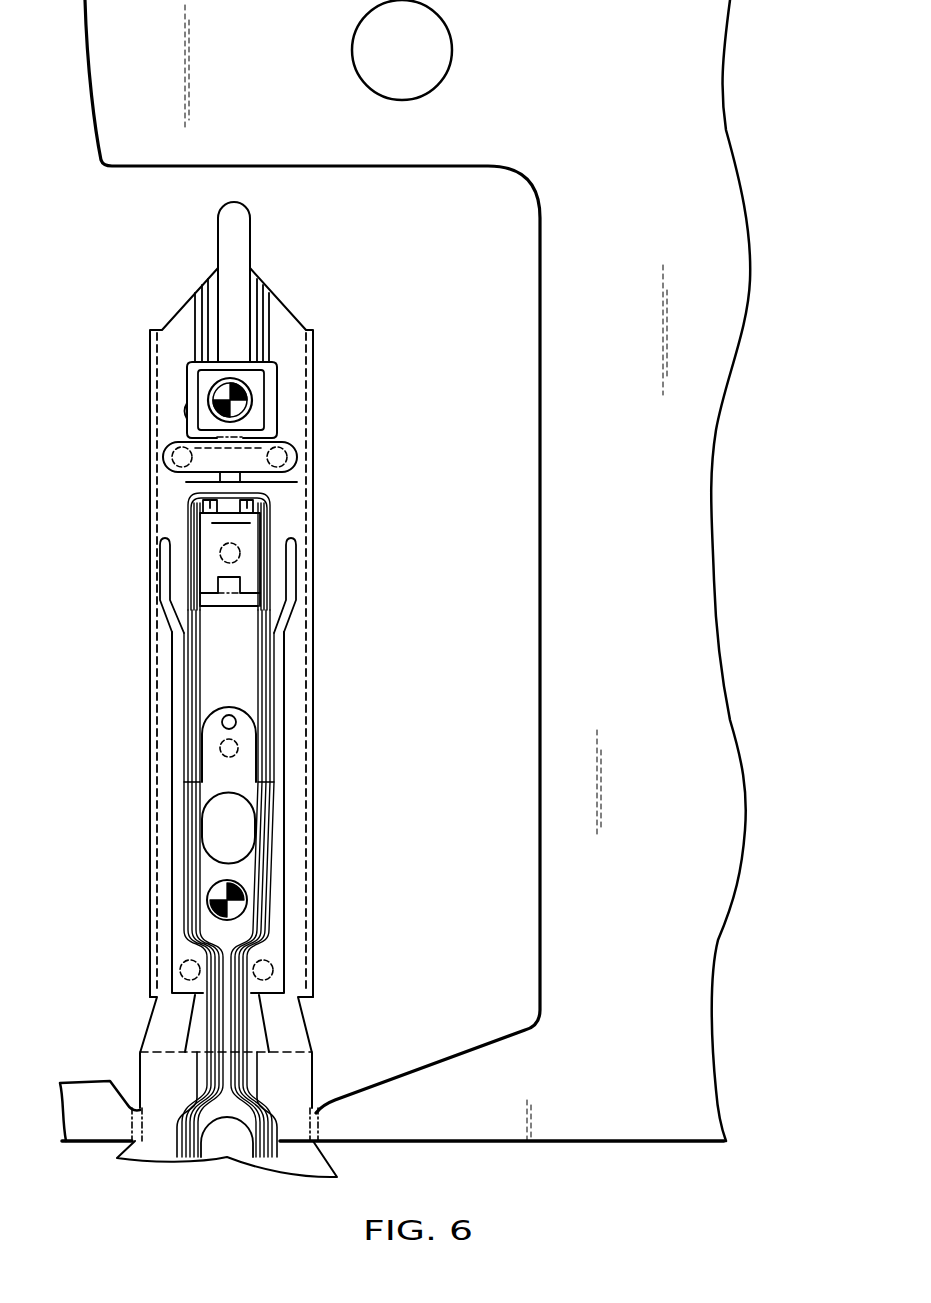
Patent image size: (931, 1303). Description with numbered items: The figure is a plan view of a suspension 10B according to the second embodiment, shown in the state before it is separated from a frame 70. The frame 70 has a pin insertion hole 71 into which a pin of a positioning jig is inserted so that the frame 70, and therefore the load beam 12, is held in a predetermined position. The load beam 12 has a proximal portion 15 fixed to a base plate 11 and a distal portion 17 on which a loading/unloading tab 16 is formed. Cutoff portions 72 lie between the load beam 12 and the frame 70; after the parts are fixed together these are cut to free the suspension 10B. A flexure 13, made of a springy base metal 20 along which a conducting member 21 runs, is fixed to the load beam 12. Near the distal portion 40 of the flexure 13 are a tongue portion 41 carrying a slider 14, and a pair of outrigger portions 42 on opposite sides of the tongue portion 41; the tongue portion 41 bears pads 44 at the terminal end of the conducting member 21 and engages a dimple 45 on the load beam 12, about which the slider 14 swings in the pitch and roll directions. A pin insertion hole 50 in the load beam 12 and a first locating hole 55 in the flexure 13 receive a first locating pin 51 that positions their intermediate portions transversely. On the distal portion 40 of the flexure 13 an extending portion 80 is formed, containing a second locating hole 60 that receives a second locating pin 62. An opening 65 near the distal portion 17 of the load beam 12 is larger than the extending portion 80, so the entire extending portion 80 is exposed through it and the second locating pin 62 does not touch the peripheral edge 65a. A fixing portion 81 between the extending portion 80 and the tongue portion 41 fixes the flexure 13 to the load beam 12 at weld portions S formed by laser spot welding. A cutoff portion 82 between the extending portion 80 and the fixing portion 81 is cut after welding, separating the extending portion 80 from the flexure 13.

The frame 70 is at (693, 580).
The pin insertion hole 71 is at (440, 68).
The load beam 12 is at (138, 672).
The suspension 10B is at (412, 533).
The loading/unloading tab 16 is at (236, 220).
The distal portion 17 is at (253, 268).
The opening 65 is at (192, 392).
The extending portion 80 is at (252, 372).
The peripheral edge 65a is at (186, 410).
The second locating pin 62 is at (247, 392).
The second locating hole 60 is at (256, 411).
The cutoff portion 82 is at (268, 427).
The distal portion 40 is at (172, 433).
The weld portion S is at (294, 455).
The pads 44 is at (218, 498).
The fixing portion 81 is at (275, 473).
The conducting member 21 is at (264, 768).
The tongue portion 41 is at (238, 540).
The dimple 45 is at (220, 550).
The slider 14 is at (262, 578).
The outrigger portions 42 is at (293, 566).
The flexure 13 is at (295, 697).
The base metal 20 is at (234, 765).
The first locating pin 51 is at (233, 892).
The pin insertion hole 50 is at (210, 910).
The first locating hole 55 is at (247, 913).
The proximal portion 15 is at (310, 1034).
The cutoff portions 72 is at (343, 1082).
The base plate 11 is at (307, 1163).